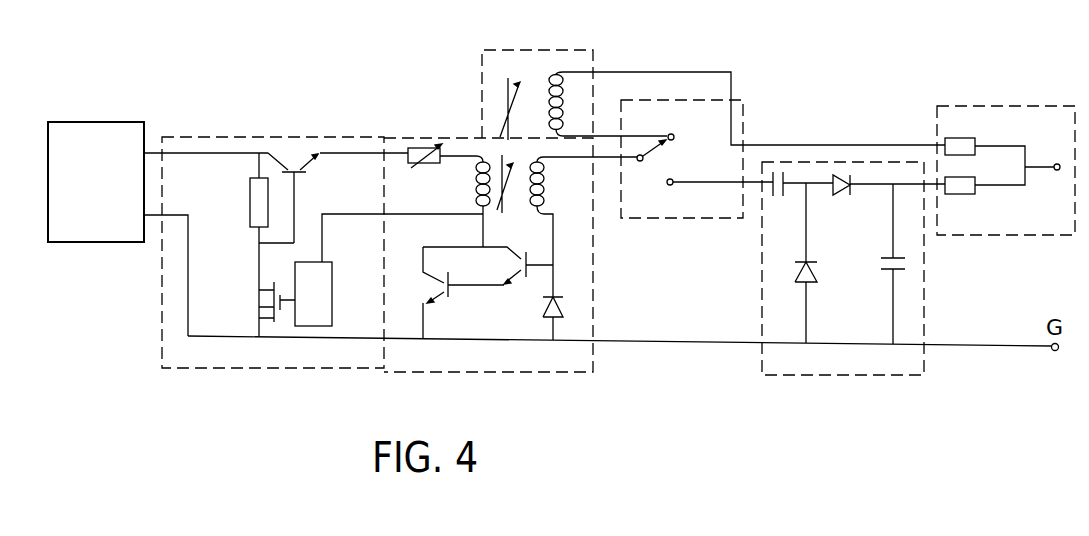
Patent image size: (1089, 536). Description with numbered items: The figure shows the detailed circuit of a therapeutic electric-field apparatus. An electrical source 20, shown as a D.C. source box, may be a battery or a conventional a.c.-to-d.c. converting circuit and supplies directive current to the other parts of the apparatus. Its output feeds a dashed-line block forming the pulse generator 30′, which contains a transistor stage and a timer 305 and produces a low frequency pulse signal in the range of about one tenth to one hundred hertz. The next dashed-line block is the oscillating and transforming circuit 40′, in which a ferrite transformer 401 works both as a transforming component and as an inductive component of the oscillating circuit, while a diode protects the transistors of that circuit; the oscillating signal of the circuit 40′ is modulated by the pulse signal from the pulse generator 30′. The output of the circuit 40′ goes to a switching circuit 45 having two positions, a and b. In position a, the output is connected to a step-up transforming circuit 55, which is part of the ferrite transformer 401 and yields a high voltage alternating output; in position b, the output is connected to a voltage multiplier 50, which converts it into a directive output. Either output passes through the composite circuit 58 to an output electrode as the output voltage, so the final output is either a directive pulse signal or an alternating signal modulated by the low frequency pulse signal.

The electrical source 20 is at (93, 122).
The pulse generator 30′ is at (322, 219).
The timer 305 is at (336, 275).
The oscillating and transforming circuit 40′ is at (510, 231).
The ferrite transformer 401 is at (507, 204).
The step-up transforming circuit 55 is at (533, 50).
The switching circuit 45 is at (676, 218).
The voltage multiplier 50 is at (843, 162).
The composite circuit 58 is at (988, 106).